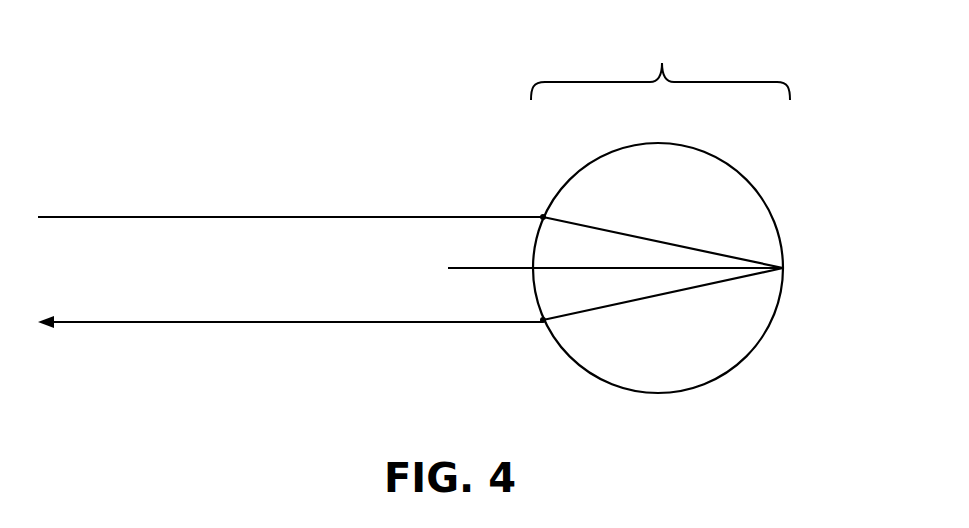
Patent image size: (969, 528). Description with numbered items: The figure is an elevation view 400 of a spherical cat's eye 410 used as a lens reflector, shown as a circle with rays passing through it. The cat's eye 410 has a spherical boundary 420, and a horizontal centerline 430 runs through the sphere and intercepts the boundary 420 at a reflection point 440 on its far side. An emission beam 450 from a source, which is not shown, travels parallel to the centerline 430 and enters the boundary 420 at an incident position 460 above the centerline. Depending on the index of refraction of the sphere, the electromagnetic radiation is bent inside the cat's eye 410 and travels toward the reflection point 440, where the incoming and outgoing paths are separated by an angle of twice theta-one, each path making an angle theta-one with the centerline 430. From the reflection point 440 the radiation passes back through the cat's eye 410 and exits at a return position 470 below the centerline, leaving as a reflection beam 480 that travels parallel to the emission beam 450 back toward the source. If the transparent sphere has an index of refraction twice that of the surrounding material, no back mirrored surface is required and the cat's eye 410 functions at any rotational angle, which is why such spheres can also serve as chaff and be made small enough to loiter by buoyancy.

The elevation view 400 is at (188, 159).
The spherical cat's eye 410 is at (660, 67).
The spherical boundary 420 is at (776, 212).
The horizontal centerline 430 is at (496, 264).
The reflection point 440 is at (808, 263).
The emission beam 450 is at (258, 212).
The incident position 460 is at (540, 212).
The return position 470 is at (538, 329).
The reflection beam 480 is at (202, 323).